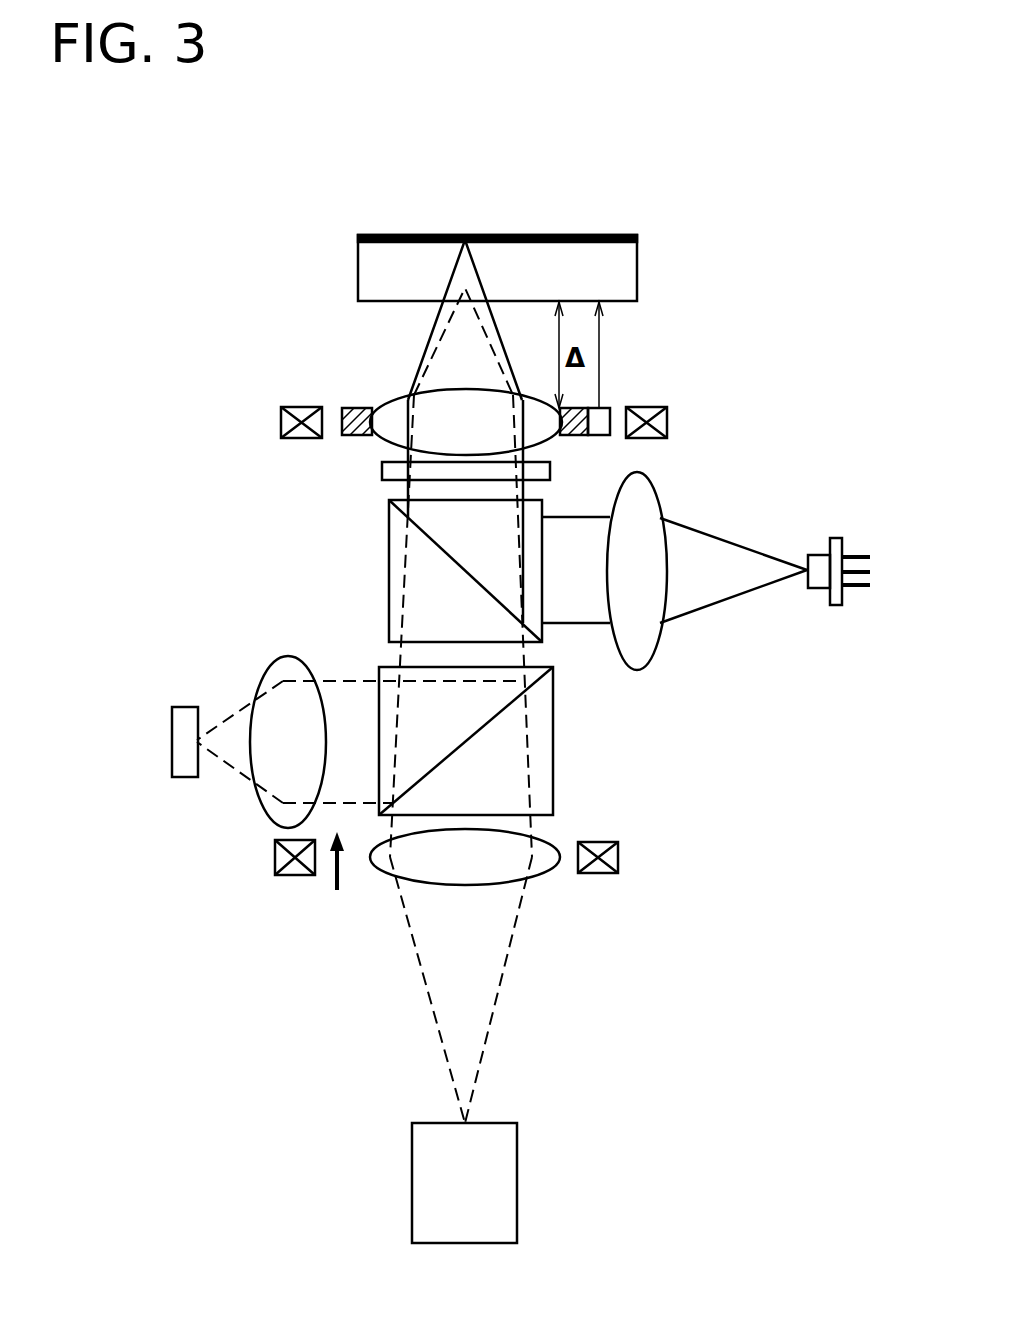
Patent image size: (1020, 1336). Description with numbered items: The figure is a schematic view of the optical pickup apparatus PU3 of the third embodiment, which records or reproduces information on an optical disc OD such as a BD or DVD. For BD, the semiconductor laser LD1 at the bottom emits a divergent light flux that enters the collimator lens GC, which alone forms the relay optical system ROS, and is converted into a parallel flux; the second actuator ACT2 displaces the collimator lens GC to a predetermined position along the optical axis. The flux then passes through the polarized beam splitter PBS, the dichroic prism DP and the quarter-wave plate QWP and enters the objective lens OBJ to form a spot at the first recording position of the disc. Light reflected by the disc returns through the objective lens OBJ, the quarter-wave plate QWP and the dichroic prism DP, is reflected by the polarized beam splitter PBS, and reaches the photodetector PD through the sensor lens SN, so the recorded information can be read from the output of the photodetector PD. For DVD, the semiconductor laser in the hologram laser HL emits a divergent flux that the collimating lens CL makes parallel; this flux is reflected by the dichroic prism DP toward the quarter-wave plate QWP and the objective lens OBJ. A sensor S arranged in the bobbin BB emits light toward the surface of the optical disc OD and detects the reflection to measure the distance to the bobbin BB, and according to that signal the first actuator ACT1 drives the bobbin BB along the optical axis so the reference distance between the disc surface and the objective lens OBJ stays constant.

The optical pickup apparatus PU3 is at (146, 223).
The optical disc OD is at (662, 188).
The sensor S is at (610, 408).
The bobbin BB is at (350, 408).
The first actuator ACT1 is at (281, 426).
The objective lens OBJ is at (378, 443).
The quarter-wave plate QWP is at (382, 470).
The dichroic prism DP is at (389, 578).
The hologram laser HL is at (837, 538).
The collimating lens CL is at (657, 647).
The sensor lens SN is at (273, 662).
The photodetector PD is at (173, 707).
The polarized beam splitter PBS is at (553, 730).
The second actuator ACT2 is at (618, 853).
The relay optical system ROS is at (368, 882).
The collimator lens GC is at (548, 875).
The semiconductor laser LD1 is at (517, 1173).